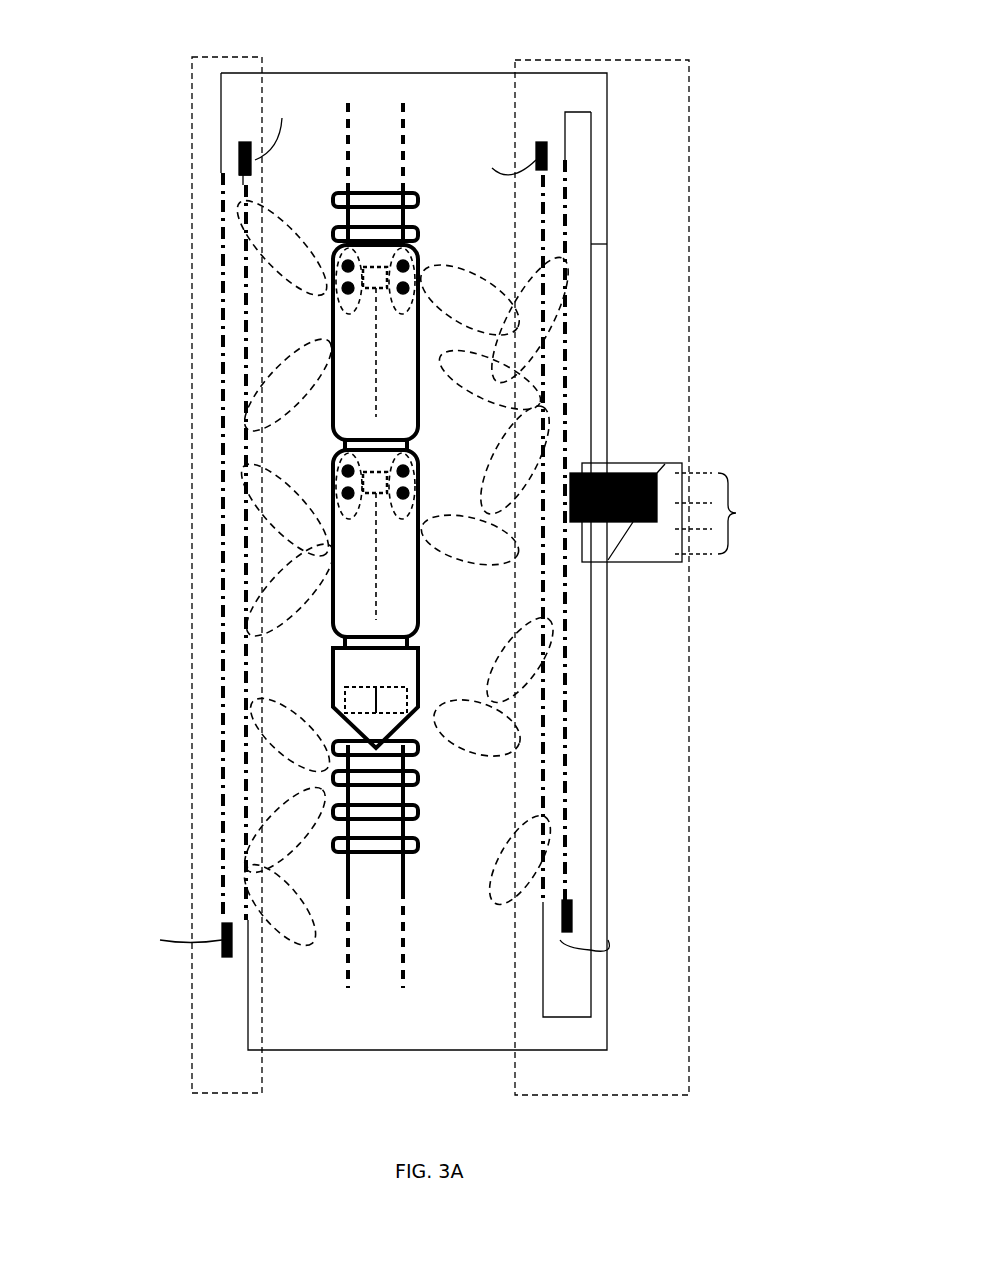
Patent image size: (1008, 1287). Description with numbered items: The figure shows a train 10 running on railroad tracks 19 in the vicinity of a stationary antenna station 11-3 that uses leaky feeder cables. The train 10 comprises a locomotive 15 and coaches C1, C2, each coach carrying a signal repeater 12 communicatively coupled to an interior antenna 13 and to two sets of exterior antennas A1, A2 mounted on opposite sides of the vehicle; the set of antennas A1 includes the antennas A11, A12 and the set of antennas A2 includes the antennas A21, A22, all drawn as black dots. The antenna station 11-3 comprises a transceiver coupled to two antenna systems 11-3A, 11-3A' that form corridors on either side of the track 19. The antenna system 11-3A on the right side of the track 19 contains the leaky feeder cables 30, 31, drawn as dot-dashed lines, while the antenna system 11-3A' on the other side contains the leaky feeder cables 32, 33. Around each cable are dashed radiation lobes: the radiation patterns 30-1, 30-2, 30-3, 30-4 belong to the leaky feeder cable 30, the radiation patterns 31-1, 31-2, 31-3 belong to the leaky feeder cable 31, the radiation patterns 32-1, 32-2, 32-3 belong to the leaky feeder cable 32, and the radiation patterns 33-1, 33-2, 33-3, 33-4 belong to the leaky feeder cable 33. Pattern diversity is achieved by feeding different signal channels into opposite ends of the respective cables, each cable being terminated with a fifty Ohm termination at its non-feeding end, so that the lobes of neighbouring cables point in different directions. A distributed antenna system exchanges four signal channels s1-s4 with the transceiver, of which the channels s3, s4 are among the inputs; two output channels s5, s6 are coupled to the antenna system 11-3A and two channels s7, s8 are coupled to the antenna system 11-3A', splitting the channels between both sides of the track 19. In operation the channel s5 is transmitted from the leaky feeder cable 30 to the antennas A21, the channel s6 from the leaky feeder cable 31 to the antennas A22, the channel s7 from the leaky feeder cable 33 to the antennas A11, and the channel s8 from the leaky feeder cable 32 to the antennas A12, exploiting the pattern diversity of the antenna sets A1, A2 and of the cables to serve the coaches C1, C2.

The train 10 is at (392, 10).
The antenna station 11-3 is at (515, 1092).
The antenna system 11-3A is at (560, 577).
The antenna system 11-3A' is at (180, 575).
The signal repeater 12 is at (372, 290).
The interior antenna 13 is at (382, 355).
The locomotive 15 is at (333, 667).
The railroad tracks 19 is at (408, 876).
The leaky feeder cable 30 is at (565, 195).
The radiation pattern 30-1 is at (507, 266).
The radiation pattern 30-2 is at (510, 434).
The radiation pattern 30-3 is at (510, 641).
The radiation pattern 30-4 is at (505, 852).
The leaky feeder cable 31 is at (552, 180).
The radiation pattern 31-1 is at (488, 348).
The radiation pattern 31-2 is at (504, 548).
The radiation pattern 31-3 is at (480, 746).
The leaky feeder cable 32 is at (243, 325).
The radiation pattern 32-1 is at (270, 363).
The radiation pattern 32-2 is at (262, 572).
The radiation pattern 32-3 is at (302, 802).
The leaky feeder cable 33 is at (222, 262).
The radiation pattern 33-1 is at (262, 240).
The radiation pattern 33-2 is at (272, 480).
The radiation pattern 33-3 is at (302, 714).
The radiation pattern 33-4 is at (310, 914).
The set of antennas A1 is at (332, 290).
The set of antennas A2 is at (425, 295).
The antenna A11 is at (333, 268).
The antenna A12 is at (332, 320).
The antenna A21 is at (414, 262).
The antenna A22 is at (410, 305).
The coach C1 is at (420, 560).
The coach C2 is at (332, 400).
The signal channels s1-s4 is at (736, 513).
The signal channel s3 is at (222, 123).
The signal channel s4 is at (247, 1012).
The output channel s5 is at (592, 244).
The output channel s6 is at (591, 832).
The output channel s7 is at (607, 388).
The output channel s8 is at (607, 745).